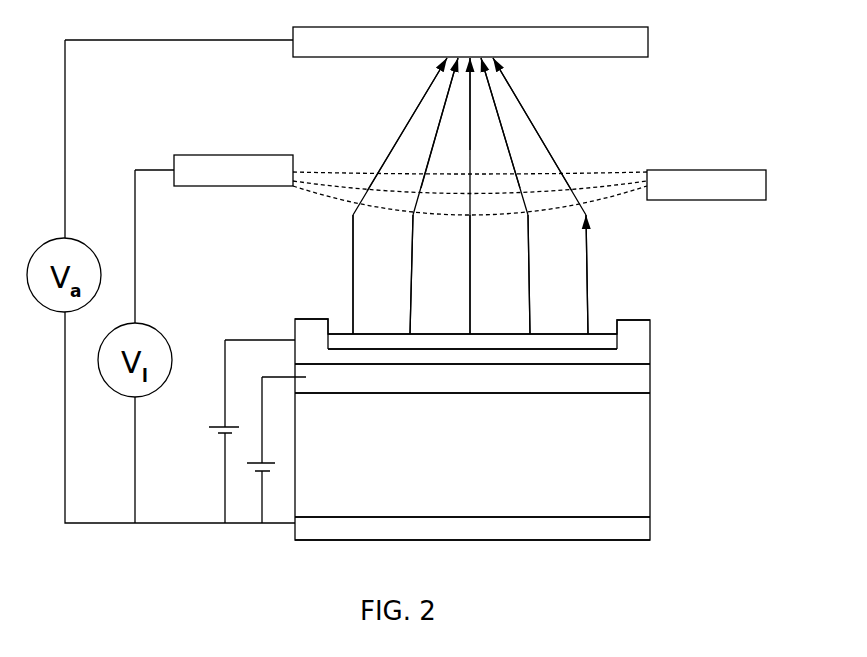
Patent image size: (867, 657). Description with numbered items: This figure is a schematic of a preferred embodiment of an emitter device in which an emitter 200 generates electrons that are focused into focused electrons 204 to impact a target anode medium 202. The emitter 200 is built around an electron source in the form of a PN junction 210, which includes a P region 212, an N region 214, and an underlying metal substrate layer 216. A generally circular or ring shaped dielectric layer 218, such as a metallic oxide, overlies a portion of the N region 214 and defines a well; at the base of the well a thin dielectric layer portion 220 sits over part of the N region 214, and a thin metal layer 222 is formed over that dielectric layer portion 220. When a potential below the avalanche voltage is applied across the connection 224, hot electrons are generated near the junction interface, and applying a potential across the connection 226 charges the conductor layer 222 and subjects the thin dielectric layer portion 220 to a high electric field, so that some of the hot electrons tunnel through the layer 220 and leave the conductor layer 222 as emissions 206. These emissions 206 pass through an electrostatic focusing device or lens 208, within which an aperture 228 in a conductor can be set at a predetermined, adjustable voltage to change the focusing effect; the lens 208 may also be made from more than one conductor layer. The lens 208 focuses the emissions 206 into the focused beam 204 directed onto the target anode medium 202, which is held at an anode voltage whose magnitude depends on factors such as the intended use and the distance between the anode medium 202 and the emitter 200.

The emitter 200 is at (201, 270).
The target anode medium 202 is at (648, 35).
The focused electrons 204 is at (570, 143).
The emissions 206 is at (603, 277).
The electrostatic focusing device or lens 208 is at (219, 155).
The PN junction 210 is at (504, 398).
The P region 212 is at (638, 468).
The N region 214 is at (632, 379).
The metal substrate layer 216 is at (633, 533).
The dielectric layer 218 is at (632, 328).
The thin dielectric layer portion 220 is at (388, 340).
The thin metal layer 222 is at (358, 354).
The connection 224 is at (260, 500).
The connection 226 is at (222, 478).
The aperture 228 is at (617, 210).